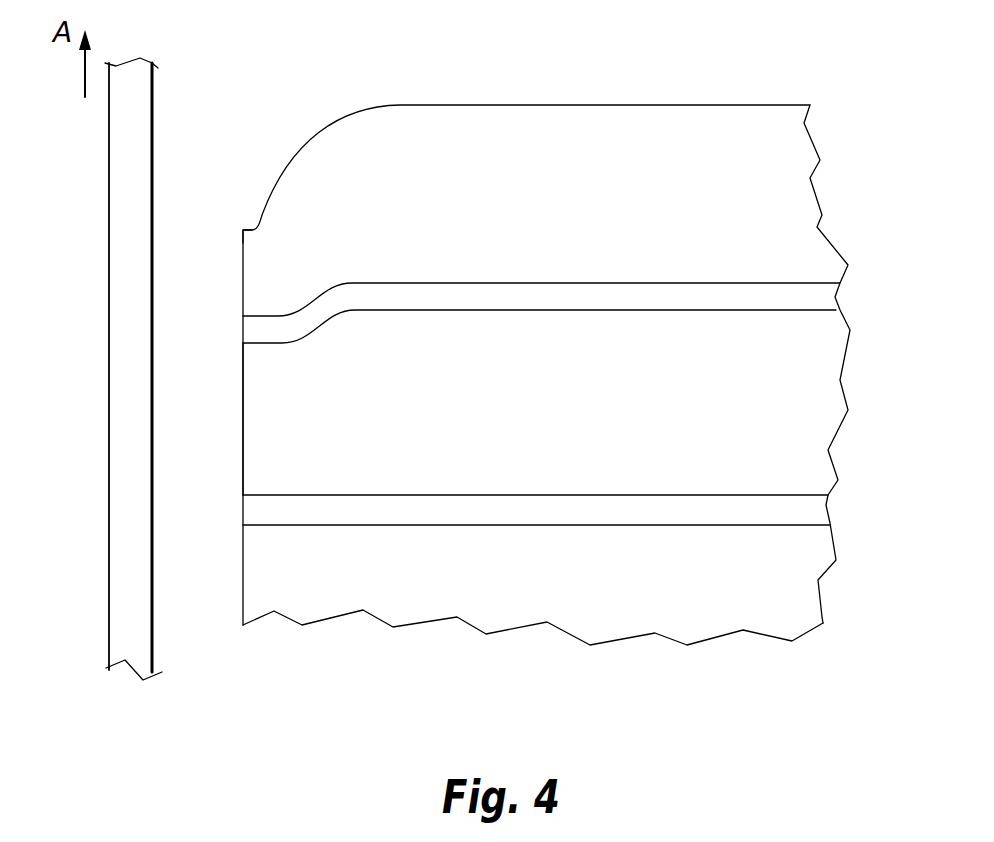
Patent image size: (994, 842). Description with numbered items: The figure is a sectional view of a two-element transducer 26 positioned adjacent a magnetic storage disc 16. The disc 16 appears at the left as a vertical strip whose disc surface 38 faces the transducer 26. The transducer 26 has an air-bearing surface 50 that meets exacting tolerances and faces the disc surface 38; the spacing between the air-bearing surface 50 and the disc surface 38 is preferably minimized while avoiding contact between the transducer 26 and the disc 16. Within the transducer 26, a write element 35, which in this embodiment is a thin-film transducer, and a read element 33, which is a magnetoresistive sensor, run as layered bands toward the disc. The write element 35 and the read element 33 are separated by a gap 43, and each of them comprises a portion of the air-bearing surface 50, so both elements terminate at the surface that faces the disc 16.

The disc 16 is at (108, 181).
The disc surface 38 is at (155, 78).
The two-element transducer 26 is at (786, 108).
The air-bearing surface 50 is at (243, 243).
The write element 35 is at (250, 325).
The gap 43 is at (257, 412).
The read element 33 is at (257, 508).